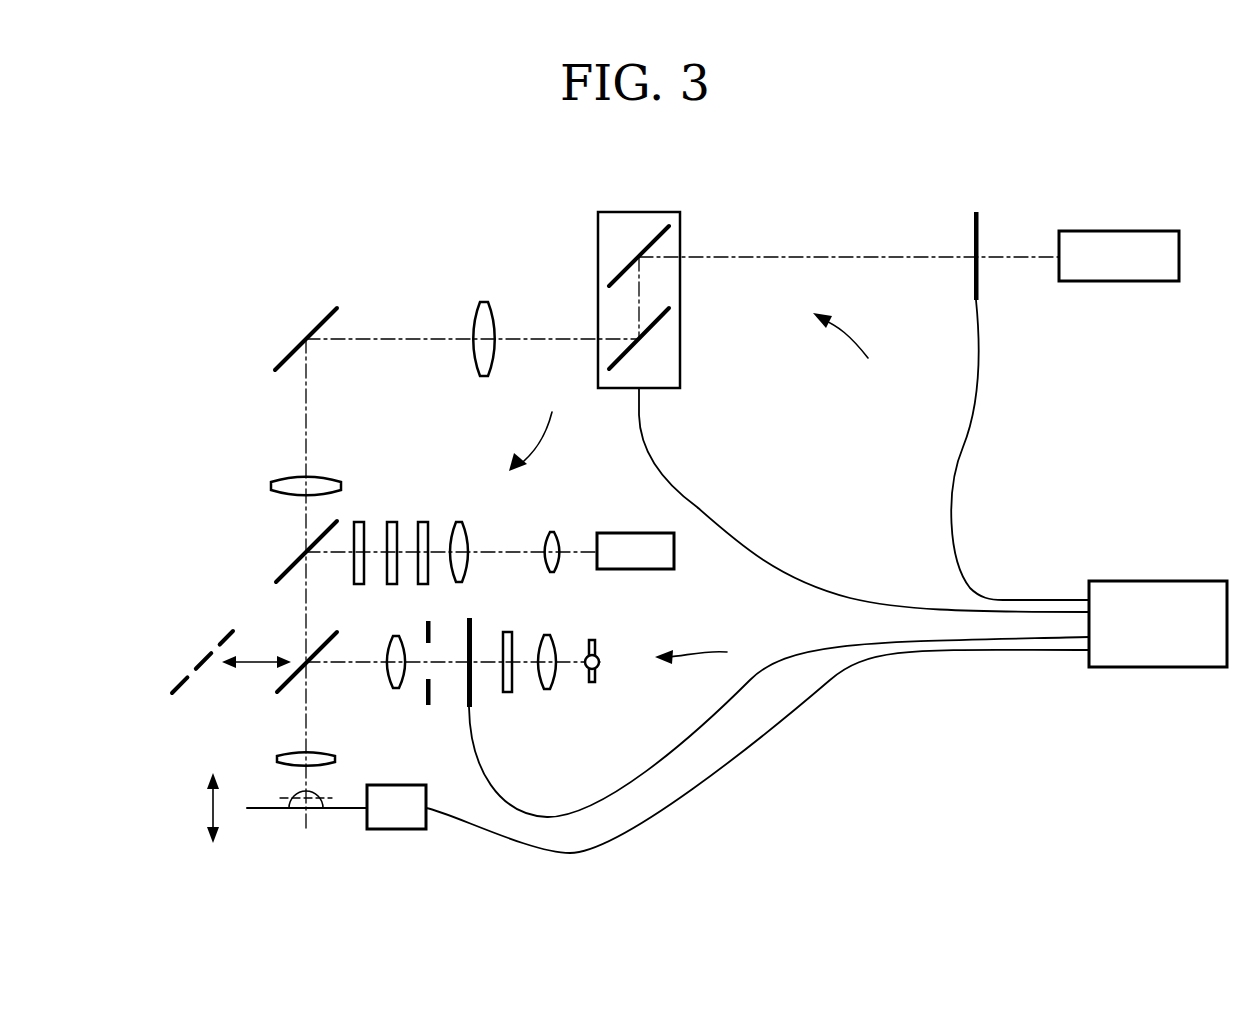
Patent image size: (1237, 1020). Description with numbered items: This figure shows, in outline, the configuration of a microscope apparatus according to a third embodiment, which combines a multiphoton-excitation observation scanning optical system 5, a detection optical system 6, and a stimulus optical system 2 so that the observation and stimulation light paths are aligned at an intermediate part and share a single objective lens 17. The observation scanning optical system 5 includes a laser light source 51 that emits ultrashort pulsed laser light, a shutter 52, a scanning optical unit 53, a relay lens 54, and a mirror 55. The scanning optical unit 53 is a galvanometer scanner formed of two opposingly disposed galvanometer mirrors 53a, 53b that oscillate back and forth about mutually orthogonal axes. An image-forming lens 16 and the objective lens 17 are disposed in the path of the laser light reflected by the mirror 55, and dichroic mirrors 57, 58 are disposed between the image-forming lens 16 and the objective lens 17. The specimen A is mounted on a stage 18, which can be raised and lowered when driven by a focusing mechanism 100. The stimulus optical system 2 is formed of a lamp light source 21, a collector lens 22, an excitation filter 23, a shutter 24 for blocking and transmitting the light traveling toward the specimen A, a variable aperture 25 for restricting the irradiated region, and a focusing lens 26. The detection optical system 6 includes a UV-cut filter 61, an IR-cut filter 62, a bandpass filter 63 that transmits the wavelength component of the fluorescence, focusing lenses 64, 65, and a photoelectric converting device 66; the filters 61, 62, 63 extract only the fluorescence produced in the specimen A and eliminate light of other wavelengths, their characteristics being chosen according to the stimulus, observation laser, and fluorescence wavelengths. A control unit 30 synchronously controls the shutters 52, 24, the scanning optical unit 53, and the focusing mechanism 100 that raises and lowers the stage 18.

The stimulus optical system 2 is at (700, 656).
The multiphoton-excitation observation scanning optical system 5 is at (849, 348).
The detection optical system 6 is at (533, 428).
The image-forming lens 16 is at (283, 480).
The objective lens 17 is at (280, 757).
The stage 18 is at (345, 812).
The lamp light source 21 is at (596, 645).
The collector lens 22 is at (556, 680).
The excitation filter 23 is at (510, 695).
The shutter 24 is at (474, 630).
The variable aperture 25 is at (426, 630).
The focusing lens 26 is at (388, 675).
The control unit 30 is at (1150, 581).
The laser light source 51 is at (1120, 231).
The shutter 52 is at (978, 222).
The scanning optical unit 53 is at (680, 295).
The galvanometer mirror 53a is at (657, 227).
The galvanometer mirror 53b is at (655, 325).
The relay lens 54 is at (484, 300).
The mirror 55 is at (327, 318).
The dichroic mirror 57 is at (282, 575).
The dichroic mirror 58 is at (277, 690).
The UV-cut filter 61 is at (359, 520).
The IR-cut filter 62 is at (392, 520).
The bandpass filter 63 is at (423, 520).
The focusing lens 64 is at (462, 522).
The focusing lens 65 is at (556, 532).
The photoelectric converting device 66 is at (628, 533).
The focusing mechanism 100 is at (398, 830).
The specimen A is at (292, 800).